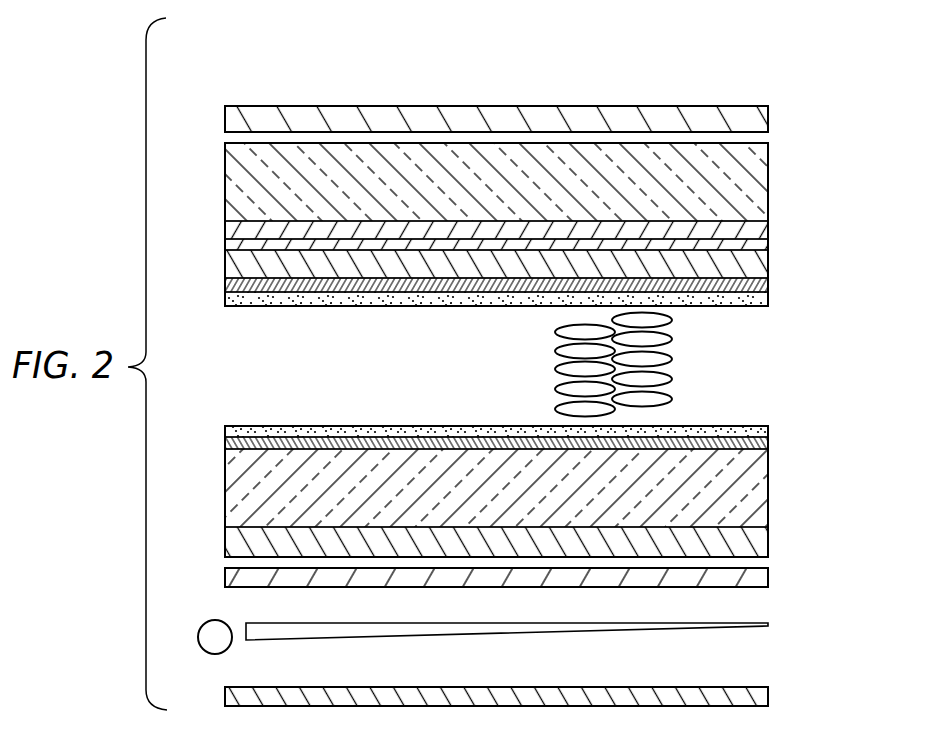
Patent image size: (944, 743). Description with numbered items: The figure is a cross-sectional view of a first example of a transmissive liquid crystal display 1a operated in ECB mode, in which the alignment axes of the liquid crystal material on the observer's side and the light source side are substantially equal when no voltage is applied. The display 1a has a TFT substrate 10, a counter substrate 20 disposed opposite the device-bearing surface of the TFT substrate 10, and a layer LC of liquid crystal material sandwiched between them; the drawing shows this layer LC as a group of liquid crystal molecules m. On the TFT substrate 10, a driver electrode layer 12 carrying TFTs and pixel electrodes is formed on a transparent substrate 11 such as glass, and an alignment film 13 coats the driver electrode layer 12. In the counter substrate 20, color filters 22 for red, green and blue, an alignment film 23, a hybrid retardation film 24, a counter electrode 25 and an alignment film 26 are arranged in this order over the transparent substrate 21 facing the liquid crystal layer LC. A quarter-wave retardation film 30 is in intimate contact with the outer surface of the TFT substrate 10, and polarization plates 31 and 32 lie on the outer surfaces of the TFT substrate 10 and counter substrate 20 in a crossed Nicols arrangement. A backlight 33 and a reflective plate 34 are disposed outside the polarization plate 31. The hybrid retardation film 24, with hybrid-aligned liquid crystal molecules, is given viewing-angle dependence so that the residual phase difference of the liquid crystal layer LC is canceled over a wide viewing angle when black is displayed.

The liquid crystal display 1a is at (270, 78).
The TFT substrate 10 is at (797, 508).
The transparent substrate 11 is at (770, 482).
The driver electrode layer 12 is at (769, 443).
The alignment film 13 is at (769, 429).
The counter substrate 20 is at (797, 153).
The transparent substrate 21 is at (770, 180).
The color filters 22 is at (769, 227).
The alignment film 23 is at (769, 245).
The hybrid retardation film 24 is at (769, 263).
The counter electrode 25 is at (769, 285).
The alignment film 26 is at (769, 298).
The λ/4 retardation film 30 is at (770, 538).
The polarization plate 31 is at (770, 576).
The polarization plate 32 is at (770, 118).
The backlight 33 is at (648, 628).
The reflective plate 34 is at (770, 697).
The liquid crystal layer LC is at (687, 312).
The liquid crystal molecule m is at (556, 391).